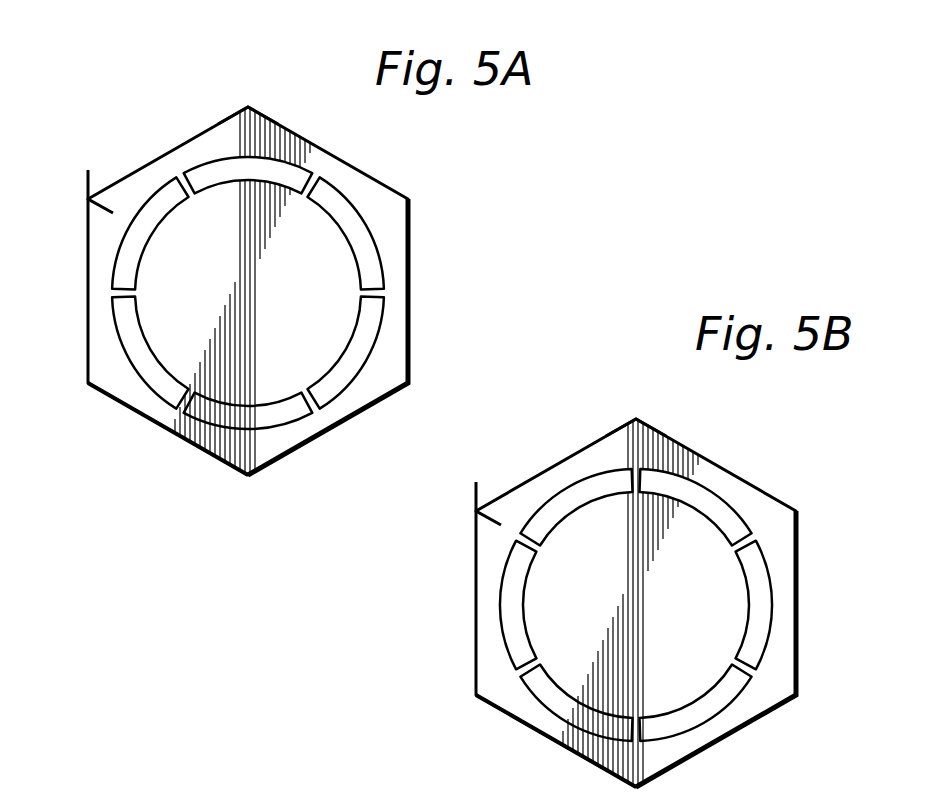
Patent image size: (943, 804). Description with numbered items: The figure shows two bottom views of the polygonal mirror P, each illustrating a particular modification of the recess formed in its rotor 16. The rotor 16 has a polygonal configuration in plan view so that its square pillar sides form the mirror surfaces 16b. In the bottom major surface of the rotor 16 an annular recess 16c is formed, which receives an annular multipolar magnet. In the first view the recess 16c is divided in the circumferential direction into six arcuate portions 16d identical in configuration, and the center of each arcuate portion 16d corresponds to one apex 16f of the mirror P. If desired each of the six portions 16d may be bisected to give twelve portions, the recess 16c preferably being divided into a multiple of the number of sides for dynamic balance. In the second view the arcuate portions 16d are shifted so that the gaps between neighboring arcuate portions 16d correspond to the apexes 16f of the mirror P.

In FIG. 5A, the rotor 16 is at (262, 138).
In FIG. 5B, the rotor 16 is at (648, 451).
In FIG. 5A, the mirror surfaces 16b is at (411, 222).
In FIG. 5B, the mirror surfaces 16b is at (750, 485).
In FIG. 5A, the annular recess 16c is at (505, 265).
In FIG. 5B, the annular recess 16c is at (636, 605).
In FIG. 5A, the arcuate portions 16d is at (387, 267).
In FIG. 5A, the apex 16f is at (249, 106).
In FIG. 5B, the apex 16f is at (637, 418).
In FIG. 5A, the polygonal mirror P is at (141, 156).
In FIG. 5B, the polygonal mirror P is at (580, 437).